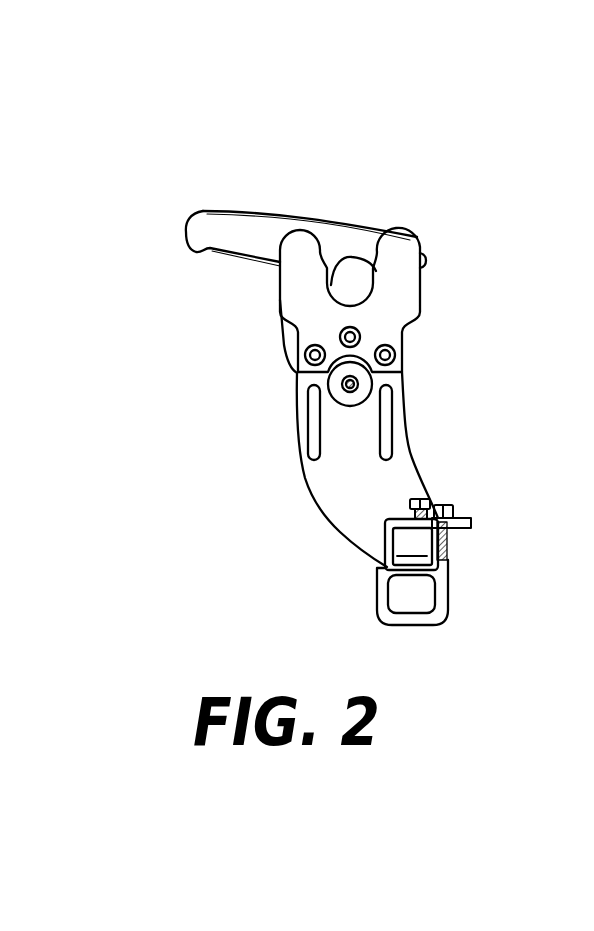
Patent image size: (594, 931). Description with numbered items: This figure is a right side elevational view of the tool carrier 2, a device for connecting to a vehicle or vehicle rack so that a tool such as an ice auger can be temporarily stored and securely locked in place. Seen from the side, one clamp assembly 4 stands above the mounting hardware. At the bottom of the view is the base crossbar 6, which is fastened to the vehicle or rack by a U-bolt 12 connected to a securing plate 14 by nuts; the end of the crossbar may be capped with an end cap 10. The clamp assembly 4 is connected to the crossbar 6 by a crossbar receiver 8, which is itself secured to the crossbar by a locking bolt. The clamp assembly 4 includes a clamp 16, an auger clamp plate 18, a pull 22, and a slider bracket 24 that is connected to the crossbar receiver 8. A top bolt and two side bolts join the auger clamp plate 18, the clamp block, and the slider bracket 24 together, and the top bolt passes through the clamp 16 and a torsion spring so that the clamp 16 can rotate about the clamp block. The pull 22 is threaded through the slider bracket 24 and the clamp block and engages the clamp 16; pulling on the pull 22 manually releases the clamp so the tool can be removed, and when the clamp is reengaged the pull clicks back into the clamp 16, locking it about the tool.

The tool carrier 2 is at (136, 152).
The clamp assembly 4 is at (259, 374).
The base crossbar 6 is at (447, 560).
The crossbar receiver 8 is at (386, 547).
The end cap 10 is at (411, 545).
The U-bolt 12 is at (447, 608).
The securing plate 14 is at (460, 520).
The clamp 16 is at (343, 223).
The auger clamp plate 18 is at (405, 304).
The pull 22 is at (374, 384).
The slider bracket 24 is at (327, 477).